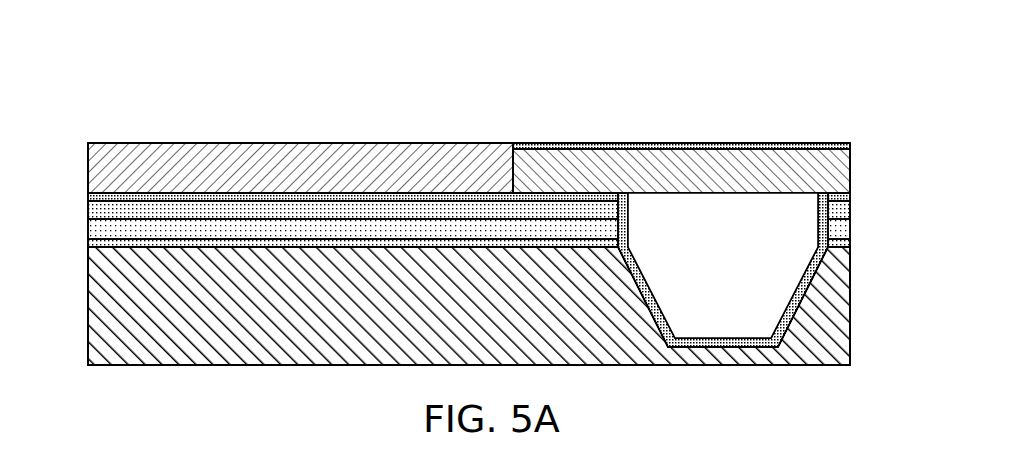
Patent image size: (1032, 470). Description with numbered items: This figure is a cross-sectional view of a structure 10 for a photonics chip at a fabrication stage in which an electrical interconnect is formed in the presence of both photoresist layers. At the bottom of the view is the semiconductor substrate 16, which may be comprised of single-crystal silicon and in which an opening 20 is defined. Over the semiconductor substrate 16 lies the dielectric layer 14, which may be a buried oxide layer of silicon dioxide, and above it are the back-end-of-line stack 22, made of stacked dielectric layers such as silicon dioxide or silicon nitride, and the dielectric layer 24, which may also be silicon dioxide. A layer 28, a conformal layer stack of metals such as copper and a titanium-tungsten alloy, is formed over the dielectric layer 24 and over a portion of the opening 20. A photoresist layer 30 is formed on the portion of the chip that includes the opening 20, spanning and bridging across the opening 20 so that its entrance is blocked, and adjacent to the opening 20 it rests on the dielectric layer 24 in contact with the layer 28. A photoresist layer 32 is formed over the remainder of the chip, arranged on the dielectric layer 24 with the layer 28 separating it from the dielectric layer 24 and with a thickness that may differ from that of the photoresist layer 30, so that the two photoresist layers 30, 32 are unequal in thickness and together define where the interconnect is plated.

The structure 10 is at (124, 49).
The dielectric layer 14 is at (828, 245).
The semiconductor substrate 16 is at (835, 315).
The opening 20 is at (738, 284).
The back-end-of-line stack 22 is at (130, 232).
The dielectric layer 24 is at (447, 209).
The layer 28 is at (346, 198).
The photoresist layer 30 is at (642, 170).
The photoresist layer 32 is at (226, 178).